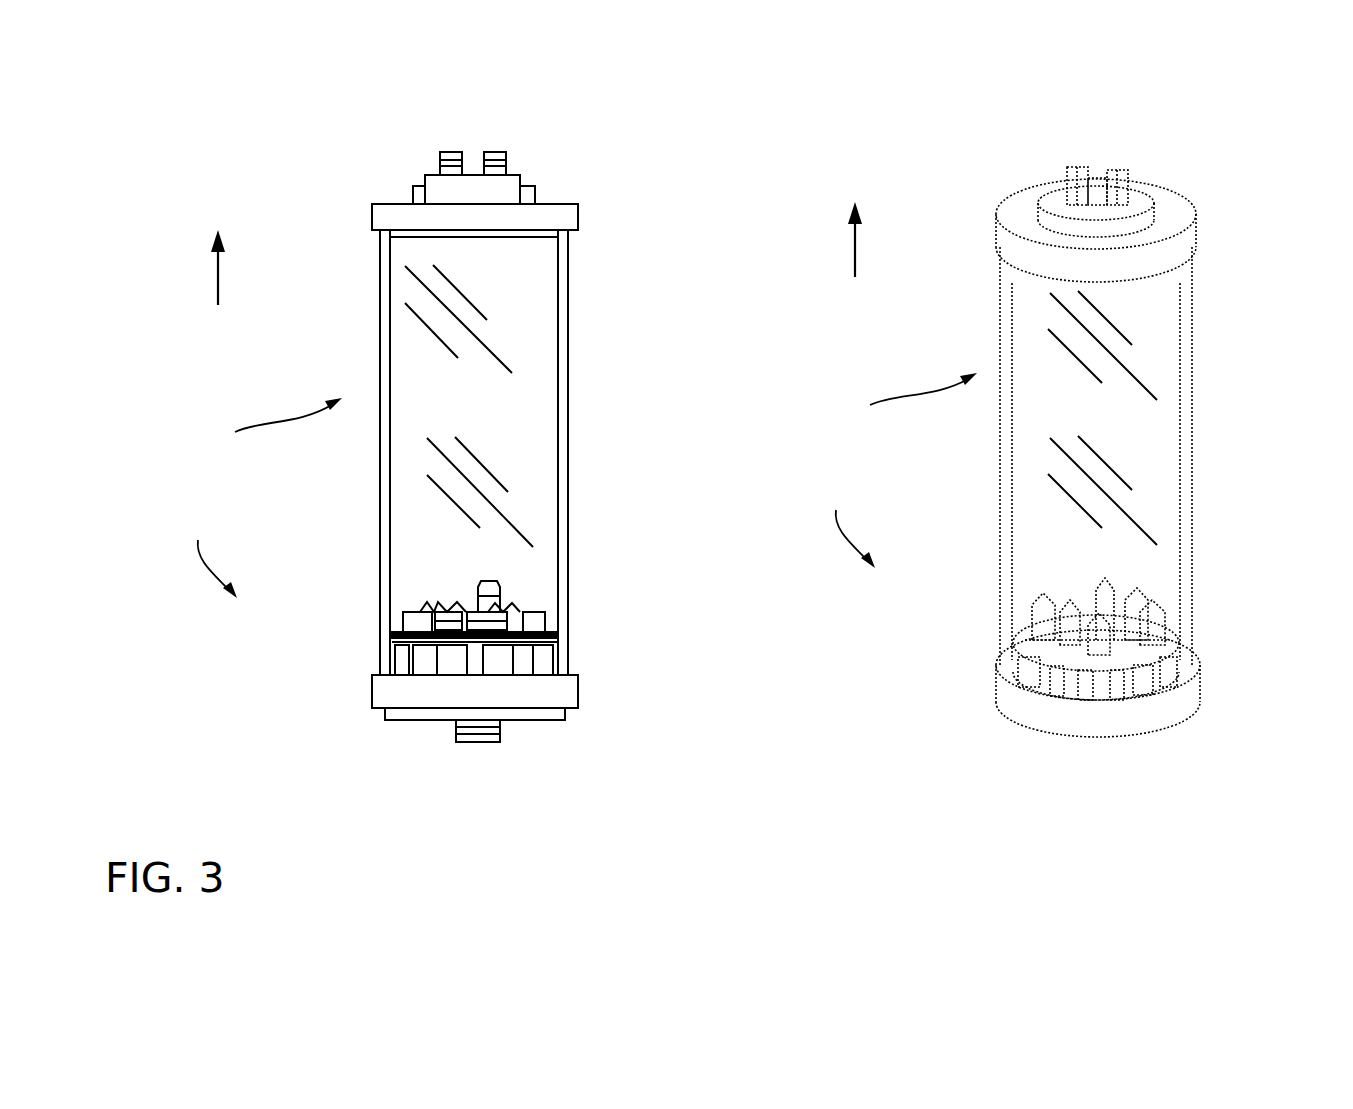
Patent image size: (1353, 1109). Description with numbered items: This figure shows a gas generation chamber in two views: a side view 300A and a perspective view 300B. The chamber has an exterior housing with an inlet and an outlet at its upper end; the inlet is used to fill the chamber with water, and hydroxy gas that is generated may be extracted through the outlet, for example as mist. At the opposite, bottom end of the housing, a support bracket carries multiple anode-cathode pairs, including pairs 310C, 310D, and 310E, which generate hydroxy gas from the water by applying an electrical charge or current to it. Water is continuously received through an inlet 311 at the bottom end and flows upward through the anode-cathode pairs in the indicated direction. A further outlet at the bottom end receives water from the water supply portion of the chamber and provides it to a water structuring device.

The side view 300A is at (288, 90).
The perspective view 300B is at (973, 126).
The anode-cathode pair 310C is at (1142, 610).
The anode-cathode pair 310D is at (1150, 600).
The anode-cathode pair 310E is at (1042, 610).
The inlet 311 is at (490, 745).